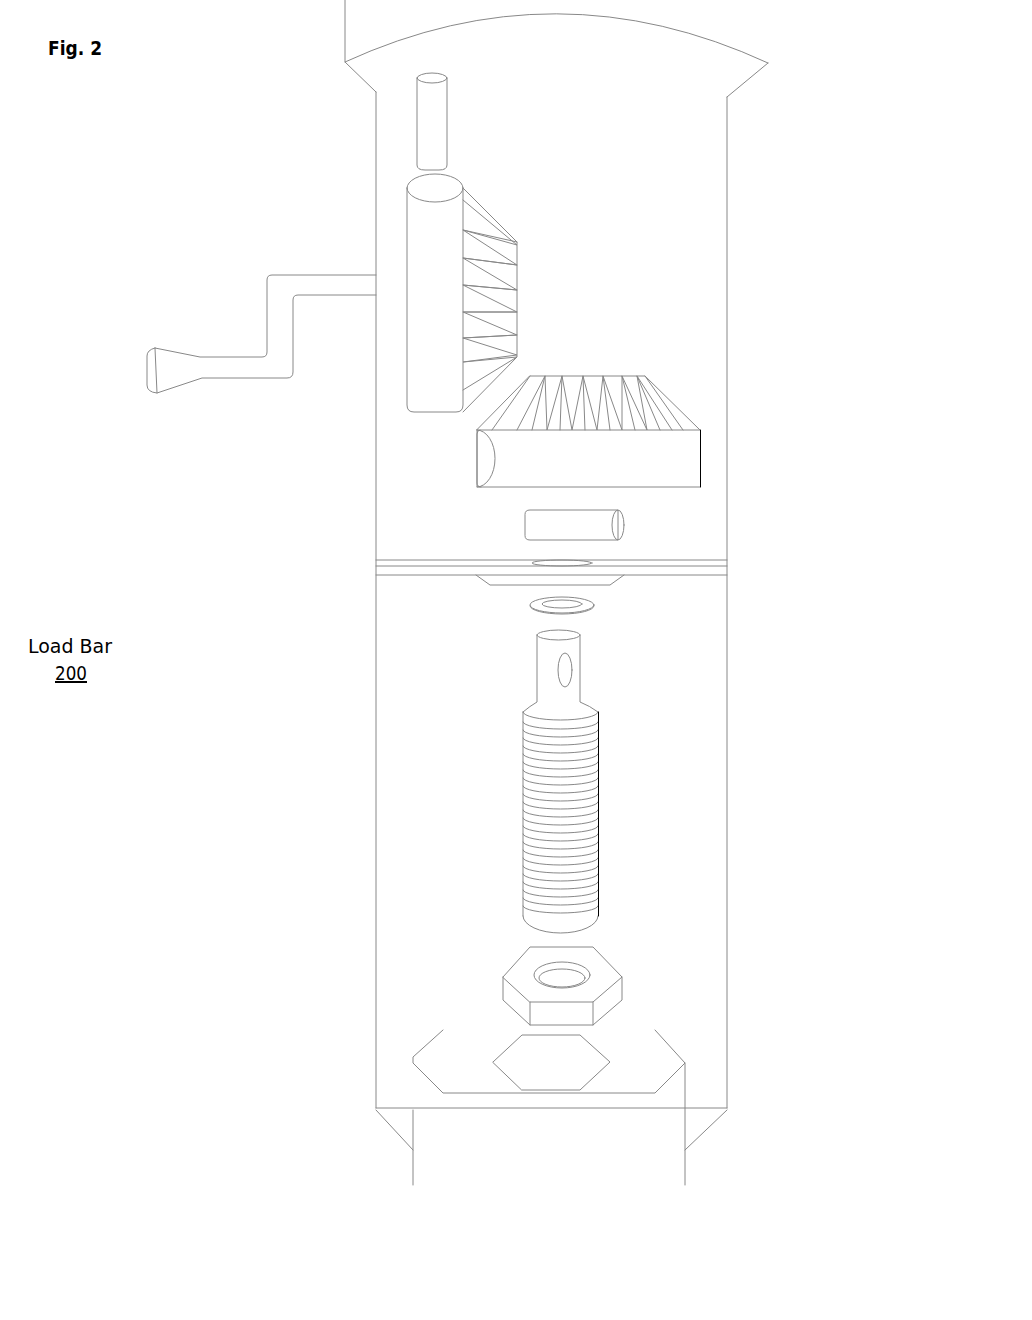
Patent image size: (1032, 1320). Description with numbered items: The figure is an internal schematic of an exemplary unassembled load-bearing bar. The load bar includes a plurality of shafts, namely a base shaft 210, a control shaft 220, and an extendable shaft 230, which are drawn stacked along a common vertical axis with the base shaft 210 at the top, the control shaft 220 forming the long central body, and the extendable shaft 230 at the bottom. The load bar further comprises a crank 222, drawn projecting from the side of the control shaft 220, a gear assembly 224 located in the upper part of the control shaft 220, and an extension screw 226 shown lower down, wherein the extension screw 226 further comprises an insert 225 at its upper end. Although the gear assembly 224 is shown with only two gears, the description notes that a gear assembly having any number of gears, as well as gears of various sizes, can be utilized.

The base shaft 210 is at (758, 50).
The control shaft 220 is at (370, 507).
The crank 222 is at (177, 363).
The gear assembly 224 is at (517, 297).
The insert 225 is at (567, 670).
The extension screw 226 is at (593, 766).
The extendable shaft 230 is at (684, 1152).